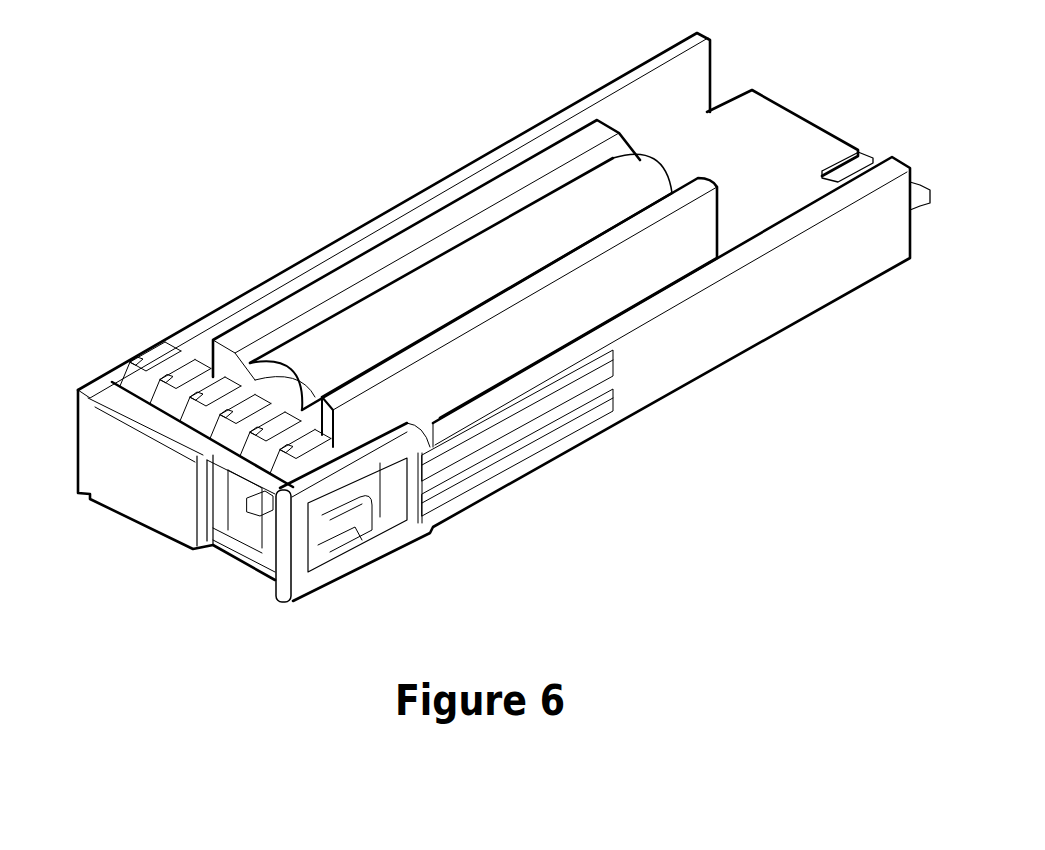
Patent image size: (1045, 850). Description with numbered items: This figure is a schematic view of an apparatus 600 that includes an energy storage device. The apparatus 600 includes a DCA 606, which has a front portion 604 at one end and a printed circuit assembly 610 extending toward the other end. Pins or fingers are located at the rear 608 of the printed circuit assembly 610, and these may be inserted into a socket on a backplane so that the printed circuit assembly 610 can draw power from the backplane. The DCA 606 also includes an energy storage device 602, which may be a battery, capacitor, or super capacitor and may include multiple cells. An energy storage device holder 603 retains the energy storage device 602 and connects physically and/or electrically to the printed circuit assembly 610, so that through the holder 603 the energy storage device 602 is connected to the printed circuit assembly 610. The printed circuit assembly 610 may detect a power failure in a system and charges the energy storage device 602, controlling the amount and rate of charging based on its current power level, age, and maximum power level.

The apparatus 600 is at (398, 153).
The energy storage device 602 is at (400, 298).
The energy storage device holder 603 is at (400, 248).
The front portion 604 is at (112, 427).
The DCA 606 is at (672, 373).
The rear 608 is at (777, 108).
The printed circuit assembly 610 is at (767, 213).